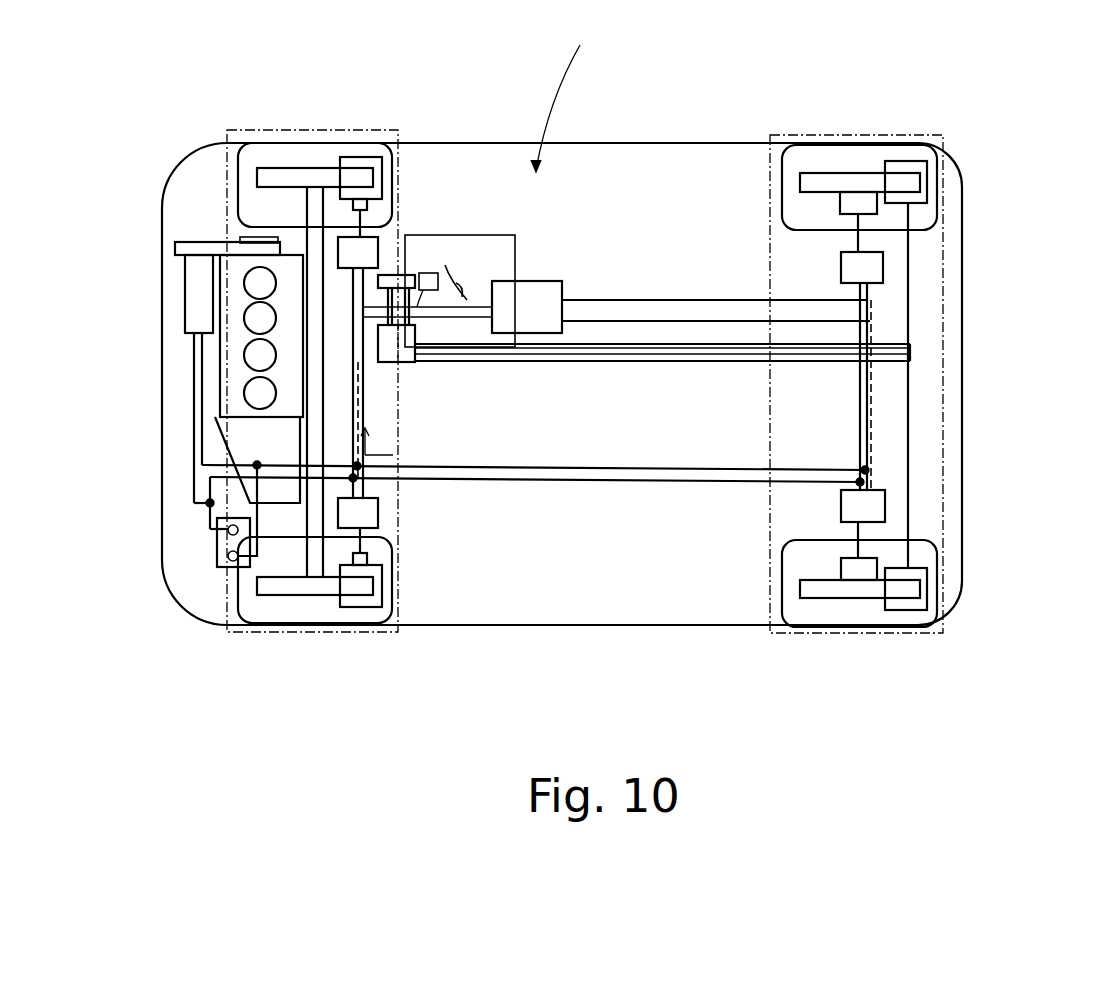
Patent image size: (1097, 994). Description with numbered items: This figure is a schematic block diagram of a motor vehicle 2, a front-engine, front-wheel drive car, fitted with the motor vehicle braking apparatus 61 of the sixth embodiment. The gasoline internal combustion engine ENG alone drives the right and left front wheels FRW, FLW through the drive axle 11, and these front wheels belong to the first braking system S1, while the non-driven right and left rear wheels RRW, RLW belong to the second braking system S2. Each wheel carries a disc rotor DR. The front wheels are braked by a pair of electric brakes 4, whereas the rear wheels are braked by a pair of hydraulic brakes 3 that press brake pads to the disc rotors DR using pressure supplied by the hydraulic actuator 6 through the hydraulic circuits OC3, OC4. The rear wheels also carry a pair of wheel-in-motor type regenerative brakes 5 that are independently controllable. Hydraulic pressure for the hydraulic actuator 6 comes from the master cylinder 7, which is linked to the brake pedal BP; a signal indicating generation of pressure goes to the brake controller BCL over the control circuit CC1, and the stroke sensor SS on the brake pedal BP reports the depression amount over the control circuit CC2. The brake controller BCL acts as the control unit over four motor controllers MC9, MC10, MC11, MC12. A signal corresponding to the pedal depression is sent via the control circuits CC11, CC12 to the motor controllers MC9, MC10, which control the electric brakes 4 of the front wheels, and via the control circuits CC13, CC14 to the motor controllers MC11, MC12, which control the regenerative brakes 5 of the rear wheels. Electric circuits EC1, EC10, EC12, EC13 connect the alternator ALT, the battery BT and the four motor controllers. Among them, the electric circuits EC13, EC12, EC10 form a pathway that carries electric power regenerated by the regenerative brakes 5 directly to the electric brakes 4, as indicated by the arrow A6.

The motor vehicle 2 is at (585, 626).
The motor vehicle braking apparatus 61 is at (568, 95).
The first braking system S1 is at (335, 633).
The second braking system S2 is at (790, 637).
The right front wheel FRW is at (236, 163).
The left front wheel FLW is at (265, 618).
The right rear wheel RRW is at (852, 157).
The left rear wheel RLW is at (867, 623).
The disc rotor DR is at (267, 178).
The electric brake 4 is at (372, 157).
The hydraulic brake 3 is at (907, 165).
The regenerative brake 5 is at (842, 208).
The hydraulic circuit OC3 is at (910, 300).
The hydraulic circuit OC4 is at (910, 447).
The motor controller MC9 is at (365, 252).
The motor controller MC10 is at (368, 503).
The motor controller MC11 is at (873, 263).
The motor controller MC12 is at (875, 503).
The control circuit CC12 is at (363, 340).
The control circuit CC2 is at (500, 235).
The master cylinder 7 is at (405, 262).
The brake pedal BP is at (468, 280).
The stroke sensor SS is at (413, 343).
The hydraulic actuator 6 is at (410, 363).
The brake controller BCL is at (527, 288).
The control circuit CC13 is at (637, 298).
The control circuit CC11 is at (468, 350).
The control circuit CC1 is at (453, 354).
The control circuit CC14 is at (668, 362).
The electric circuit EC12 is at (552, 465).
The electric circuit EC13 is at (872, 417).
The electric circuit EC10 is at (360, 410).
The electric circuit EC1 is at (200, 432).
The arrow A6 is at (378, 433).
The alternator ALT is at (192, 295).
The gasoline internal combustion engine ENG is at (238, 366).
The drive axle 11 is at (313, 243).
The battery BT is at (217, 542).